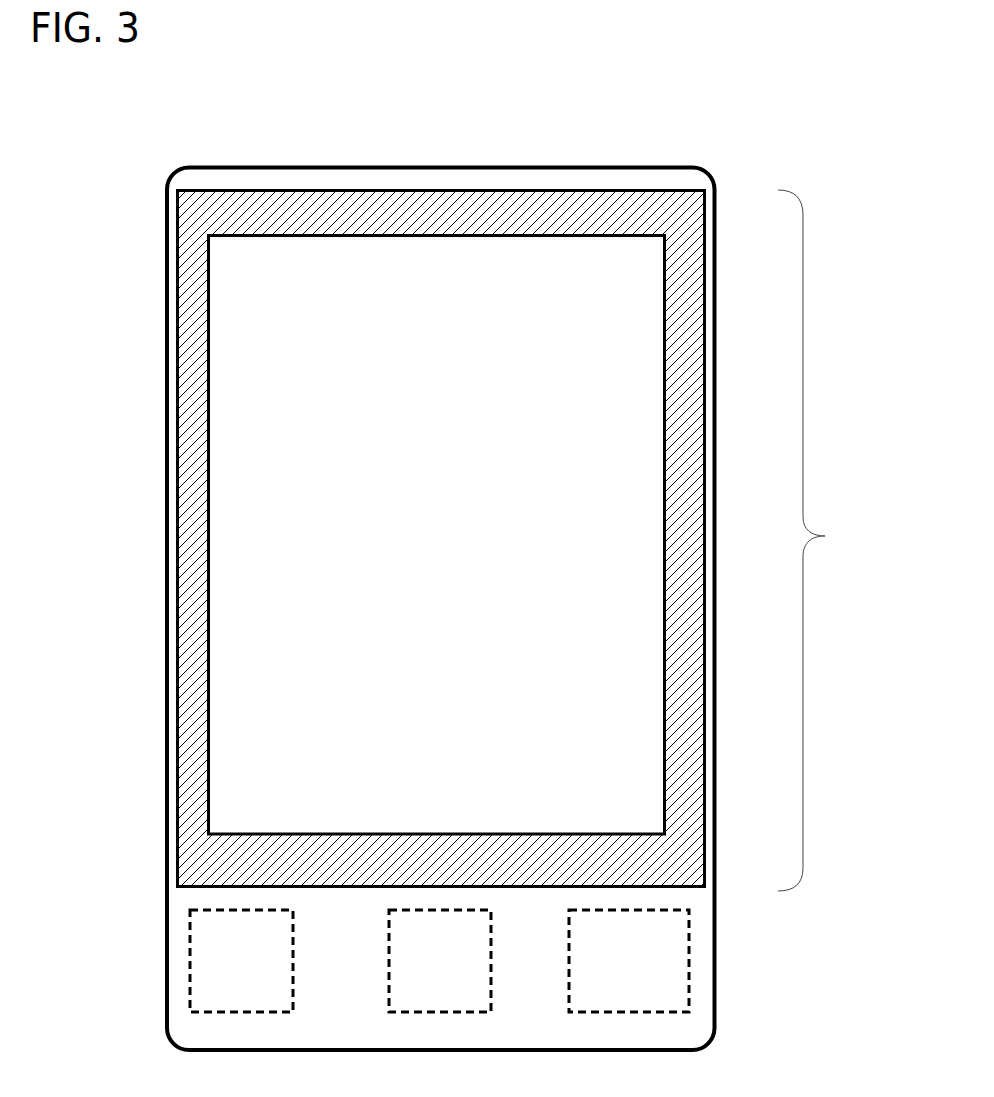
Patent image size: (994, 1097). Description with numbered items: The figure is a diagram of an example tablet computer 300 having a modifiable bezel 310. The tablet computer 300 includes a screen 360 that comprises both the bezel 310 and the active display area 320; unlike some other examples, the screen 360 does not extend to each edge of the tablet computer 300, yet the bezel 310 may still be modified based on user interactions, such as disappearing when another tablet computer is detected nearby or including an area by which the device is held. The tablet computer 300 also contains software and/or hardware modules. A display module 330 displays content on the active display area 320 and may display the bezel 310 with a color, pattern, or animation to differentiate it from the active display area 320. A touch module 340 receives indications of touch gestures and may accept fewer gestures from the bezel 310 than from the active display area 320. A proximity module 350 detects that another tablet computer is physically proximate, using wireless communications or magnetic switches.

The tablet computer 300 is at (633, 172).
The modifiable bezel 310 is at (705, 253).
The active display area 320 is at (665, 437).
The display module 330 is at (277, 942).
The touch module 340 is at (475, 940).
The proximity module 350 is at (683, 942).
The screen 360 is at (824, 540).